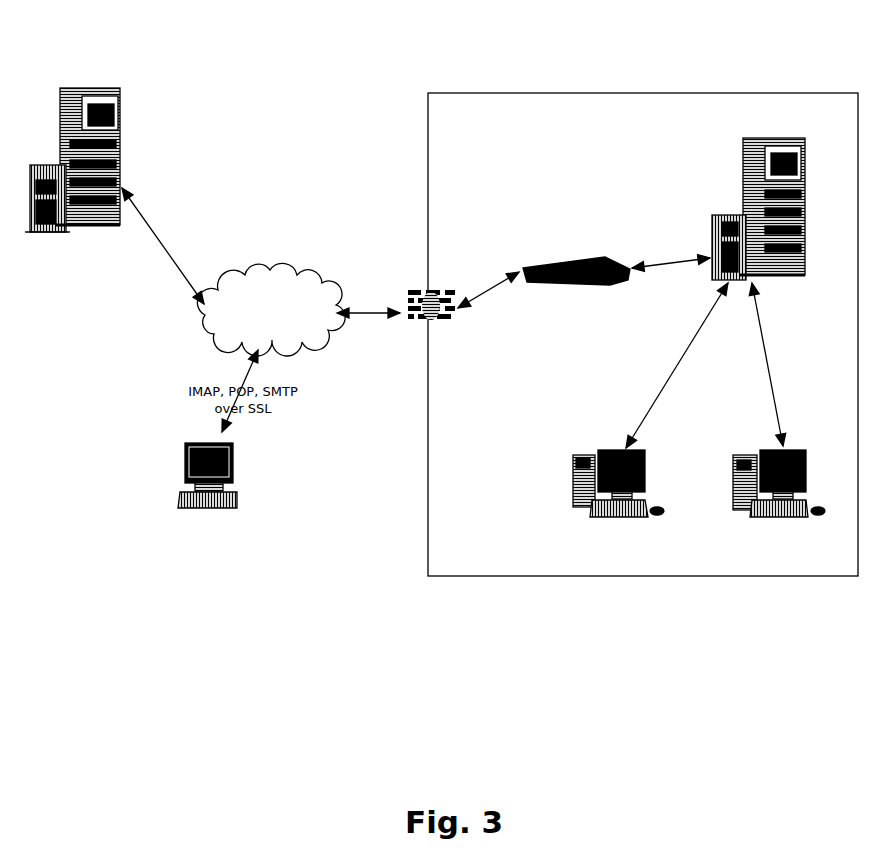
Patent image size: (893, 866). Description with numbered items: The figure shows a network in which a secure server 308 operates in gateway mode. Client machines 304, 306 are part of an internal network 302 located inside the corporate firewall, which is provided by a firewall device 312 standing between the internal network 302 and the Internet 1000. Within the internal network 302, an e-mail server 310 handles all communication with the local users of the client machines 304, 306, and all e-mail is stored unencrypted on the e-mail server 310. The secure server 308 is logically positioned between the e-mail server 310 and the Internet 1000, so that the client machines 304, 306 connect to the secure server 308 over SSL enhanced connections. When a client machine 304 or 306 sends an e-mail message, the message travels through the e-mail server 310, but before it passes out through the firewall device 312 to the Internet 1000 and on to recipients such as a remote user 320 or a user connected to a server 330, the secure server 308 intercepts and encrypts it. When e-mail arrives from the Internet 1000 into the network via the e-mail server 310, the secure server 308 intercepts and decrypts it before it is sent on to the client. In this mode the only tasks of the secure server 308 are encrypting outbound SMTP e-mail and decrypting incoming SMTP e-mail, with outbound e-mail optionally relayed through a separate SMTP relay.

The internal network 302 is at (600, 90).
The client machine 304 is at (645, 470).
The client machine 306 is at (805, 475).
The secure server 308 is at (572, 258).
The e-mail server 310 is at (745, 180).
The firewall device 312 is at (440, 291).
The remote user 320 is at (236, 460).
The server 330 is at (124, 101).
The Internet 1000 is at (274, 270).